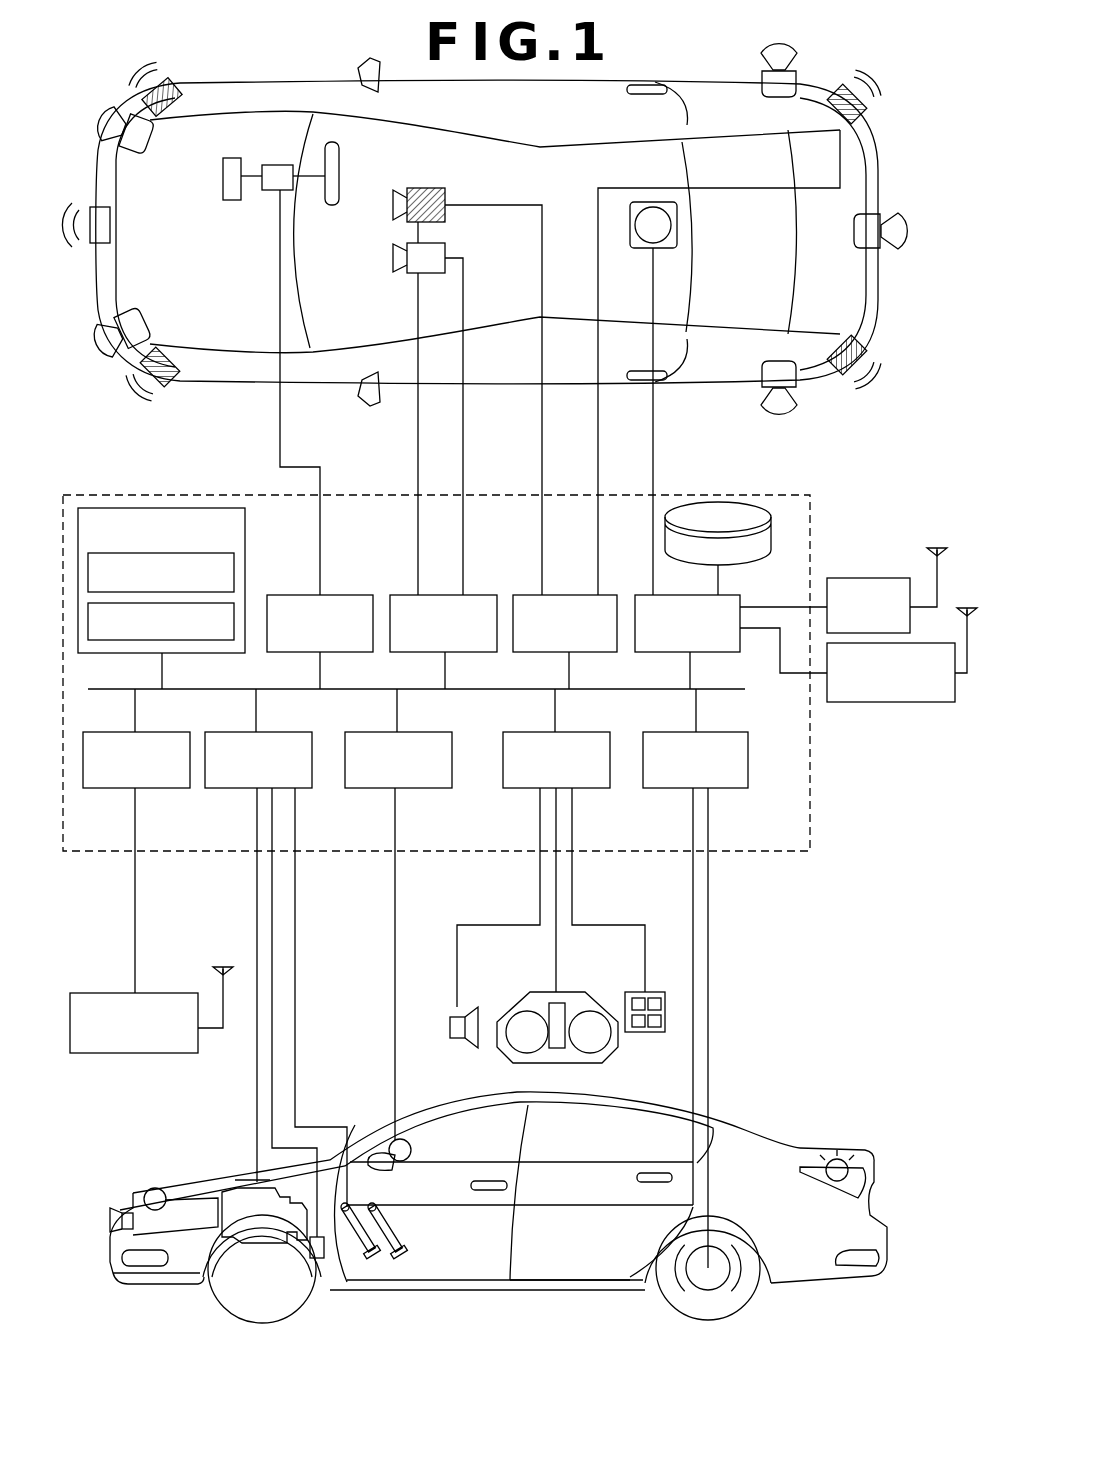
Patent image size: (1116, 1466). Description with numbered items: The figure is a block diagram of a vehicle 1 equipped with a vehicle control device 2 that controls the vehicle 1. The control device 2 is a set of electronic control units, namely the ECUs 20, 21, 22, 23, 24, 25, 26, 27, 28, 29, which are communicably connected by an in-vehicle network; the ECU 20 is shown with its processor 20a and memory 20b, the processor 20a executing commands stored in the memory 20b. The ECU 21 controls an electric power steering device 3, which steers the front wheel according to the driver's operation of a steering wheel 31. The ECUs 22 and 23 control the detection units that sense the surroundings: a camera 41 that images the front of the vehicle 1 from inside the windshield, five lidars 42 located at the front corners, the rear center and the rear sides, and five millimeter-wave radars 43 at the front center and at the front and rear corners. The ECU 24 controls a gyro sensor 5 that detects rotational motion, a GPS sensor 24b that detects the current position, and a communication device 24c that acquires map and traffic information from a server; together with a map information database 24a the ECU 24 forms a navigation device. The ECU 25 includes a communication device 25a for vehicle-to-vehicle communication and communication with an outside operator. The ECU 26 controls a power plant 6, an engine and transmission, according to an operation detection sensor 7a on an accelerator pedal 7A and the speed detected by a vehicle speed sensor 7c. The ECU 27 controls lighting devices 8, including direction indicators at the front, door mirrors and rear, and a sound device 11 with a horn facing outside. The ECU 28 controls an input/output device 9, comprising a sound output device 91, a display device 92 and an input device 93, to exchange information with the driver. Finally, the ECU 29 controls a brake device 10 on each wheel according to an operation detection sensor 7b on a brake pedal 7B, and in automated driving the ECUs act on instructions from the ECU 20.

The vehicle 1 is at (884, 140).
The vehicle control device 2 is at (778, 862).
The electric power steering device 3 is at (232, 200).
The steering wheel 31 is at (332, 207).
The camera 41 is at (452, 213).
The lidar 42 is at (140, 158).
The millimeter-wave radar 43 is at (152, 112).
The gyro sensor 5 is at (682, 222).
The ECU 20 is at (195, 570).
The processor 20a is at (240, 572).
The memory 20b is at (240, 615).
The ECU 21 is at (353, 593).
The ECU 22 is at (445, 593).
The ECU 23 is at (566, 593).
The ECU 24 is at (635, 593).
The map information database 24a is at (716, 500).
The GPS sensor 24b is at (878, 577).
The communication device 24c is at (870, 703).
The ECU 25 is at (165, 790).
The communication device 25a is at (138, 1055).
The ECU 26 is at (240, 790).
The ECU 27 is at (430, 790).
The ECU 28 is at (594, 790).
The ECU 29 is at (733, 790).
The power plant 6 is at (222, 1190).
The operation detection sensor 7a is at (350, 1200).
The operation detection sensor 7b is at (378, 1205).
The accelerator pedal 7A is at (388, 1255).
The brake pedal 7B is at (410, 1233).
The vehicle speed sensor 7c is at (318, 1260).
The lighting devices 8 is at (145, 1195).
The input/output device 9 is at (490, 1066).
The sound output device 91 is at (455, 1017).
The display device 92 is at (515, 1008).
The input device 93 is at (644, 1033).
The brake device 10 is at (710, 1292).
The sound device 11 is at (108, 1215).